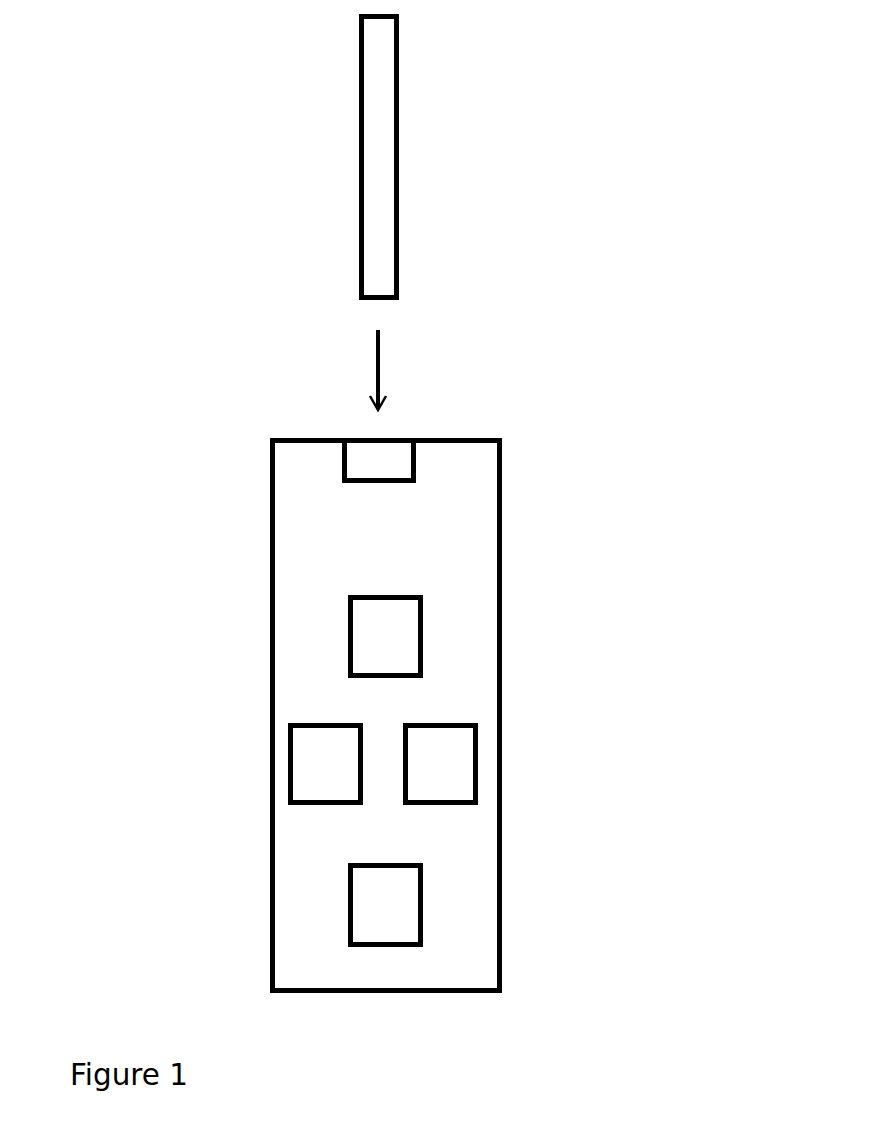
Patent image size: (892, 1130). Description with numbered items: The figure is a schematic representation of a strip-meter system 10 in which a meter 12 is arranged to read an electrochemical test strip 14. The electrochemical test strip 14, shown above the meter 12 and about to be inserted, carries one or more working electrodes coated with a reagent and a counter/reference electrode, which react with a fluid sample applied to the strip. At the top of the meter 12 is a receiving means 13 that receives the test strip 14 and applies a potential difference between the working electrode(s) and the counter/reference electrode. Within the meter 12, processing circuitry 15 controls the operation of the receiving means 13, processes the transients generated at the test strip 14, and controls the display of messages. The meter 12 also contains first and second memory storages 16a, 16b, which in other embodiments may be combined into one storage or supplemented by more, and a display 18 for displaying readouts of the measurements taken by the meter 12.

The strip-meter system 10 is at (703, 366).
The meter 12 is at (498, 677).
The receiving means 13 is at (385, 460).
The electrochemical test strip 14 is at (397, 222).
The processing circuitry 15 is at (375, 638).
The first memory storage 16a is at (308, 763).
The second memory storage 16b is at (459, 769).
The display 18 is at (402, 907).